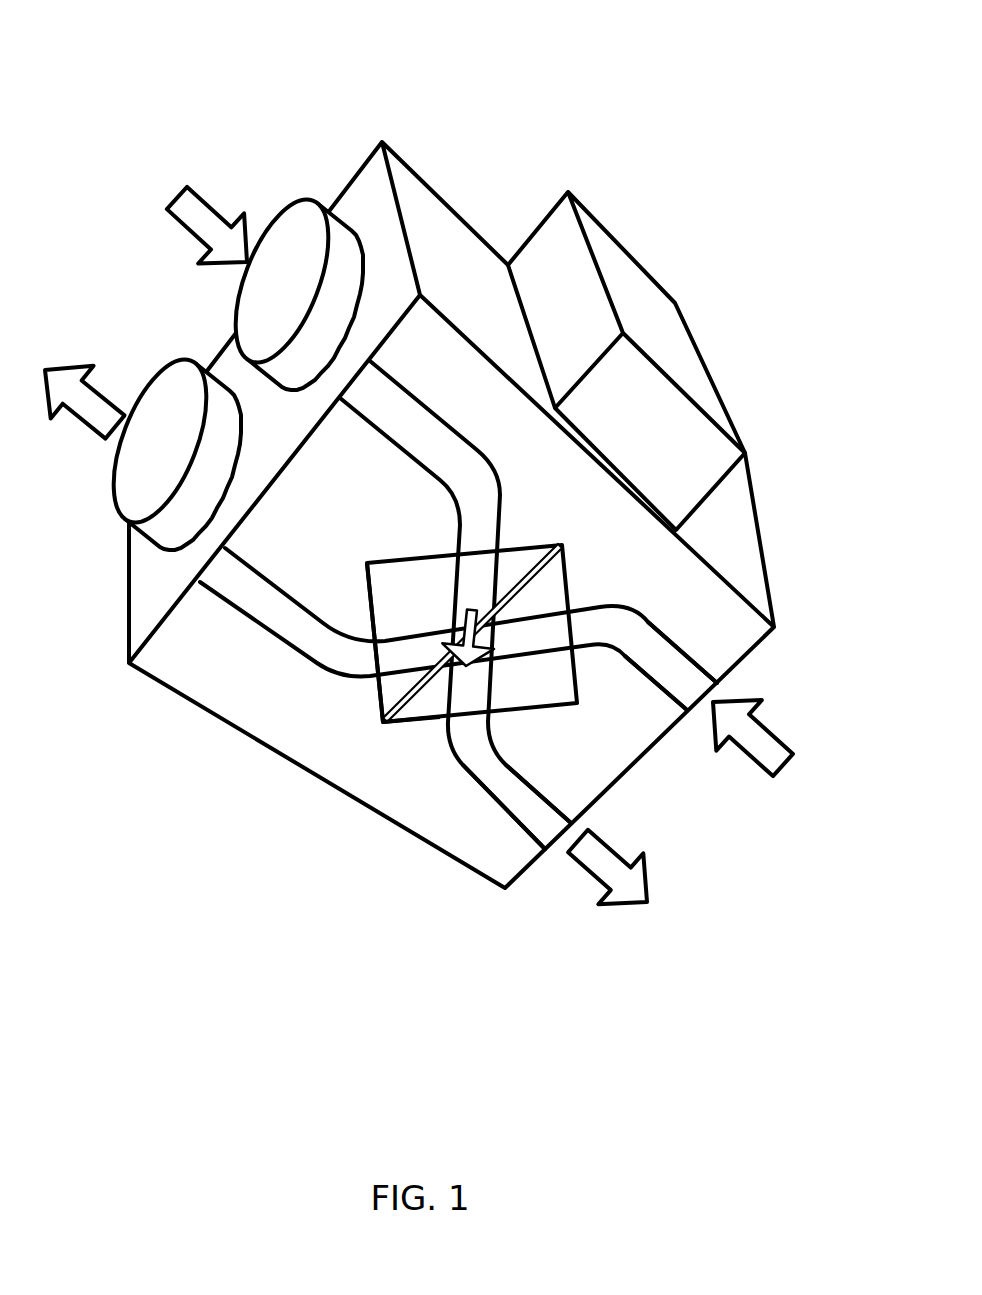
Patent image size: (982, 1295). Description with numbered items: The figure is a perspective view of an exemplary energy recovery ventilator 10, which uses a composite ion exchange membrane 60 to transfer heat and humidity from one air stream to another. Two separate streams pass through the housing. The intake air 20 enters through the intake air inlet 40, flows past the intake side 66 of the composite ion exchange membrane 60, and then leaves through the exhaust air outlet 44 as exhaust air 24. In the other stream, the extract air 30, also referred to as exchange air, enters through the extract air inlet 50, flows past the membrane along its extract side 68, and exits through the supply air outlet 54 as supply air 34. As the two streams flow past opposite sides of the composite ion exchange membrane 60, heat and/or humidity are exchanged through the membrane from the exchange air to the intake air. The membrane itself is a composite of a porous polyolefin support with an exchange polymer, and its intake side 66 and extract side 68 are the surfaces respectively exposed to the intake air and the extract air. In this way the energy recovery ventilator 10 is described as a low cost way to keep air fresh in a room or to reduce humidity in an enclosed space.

The energy recovery ventilator 10 is at (453, 163).
The intake air 20 is at (187, 205).
The exhaust air 24 is at (62, 380).
The extract air 30 is at (767, 750).
The supply air 34 is at (615, 875).
The intake air inlet 40 is at (297, 257).
The exhaust air outlet 44 is at (167, 413).
The extract air inlet 50 is at (698, 690).
The supply air outlet 54 is at (553, 843).
The composite ion exchange membrane 60 is at (563, 557).
The intake side 66 is at (543, 557).
The extract side 68 is at (398, 722).